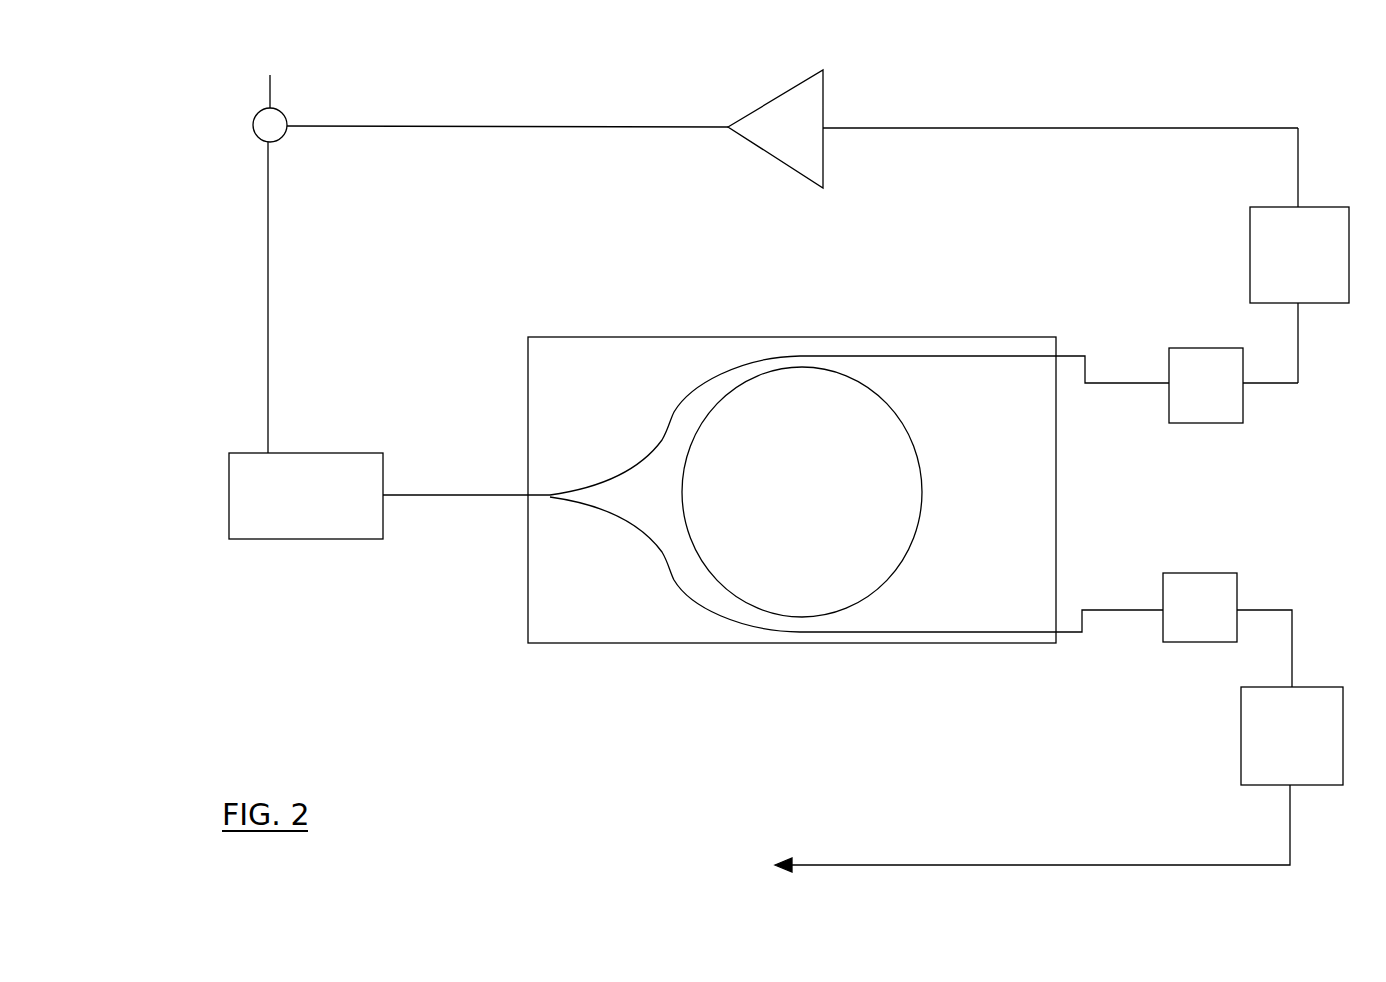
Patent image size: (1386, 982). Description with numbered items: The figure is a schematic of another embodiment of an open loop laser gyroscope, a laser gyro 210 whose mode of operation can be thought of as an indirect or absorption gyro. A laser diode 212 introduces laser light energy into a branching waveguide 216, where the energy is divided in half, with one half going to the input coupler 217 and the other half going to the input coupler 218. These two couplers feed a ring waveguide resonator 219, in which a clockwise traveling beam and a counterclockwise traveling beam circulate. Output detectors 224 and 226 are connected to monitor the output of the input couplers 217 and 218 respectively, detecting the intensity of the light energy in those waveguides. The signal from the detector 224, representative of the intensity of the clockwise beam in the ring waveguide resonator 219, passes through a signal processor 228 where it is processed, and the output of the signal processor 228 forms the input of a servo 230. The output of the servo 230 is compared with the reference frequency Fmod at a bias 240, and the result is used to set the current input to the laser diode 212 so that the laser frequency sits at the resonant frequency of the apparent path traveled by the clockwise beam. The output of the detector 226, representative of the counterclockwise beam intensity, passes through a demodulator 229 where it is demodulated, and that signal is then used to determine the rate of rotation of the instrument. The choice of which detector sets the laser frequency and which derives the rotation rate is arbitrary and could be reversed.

The laser gyro 210 is at (632, 105).
The laser diode 212 is at (283, 539).
The branching waveguide 216 is at (499, 493).
The input coupler 217 is at (643, 468).
The input coupler 218 is at (645, 528).
The ring waveguide resonator 219 is at (921, 467).
The output detector 224 is at (1197, 348).
The output detector 226 is at (1213, 573).
The signal processor 228 is at (1337, 207).
The demodulator 229 is at (1323, 785).
The servo 230 is at (823, 160).
The bias 240 is at (257, 112).